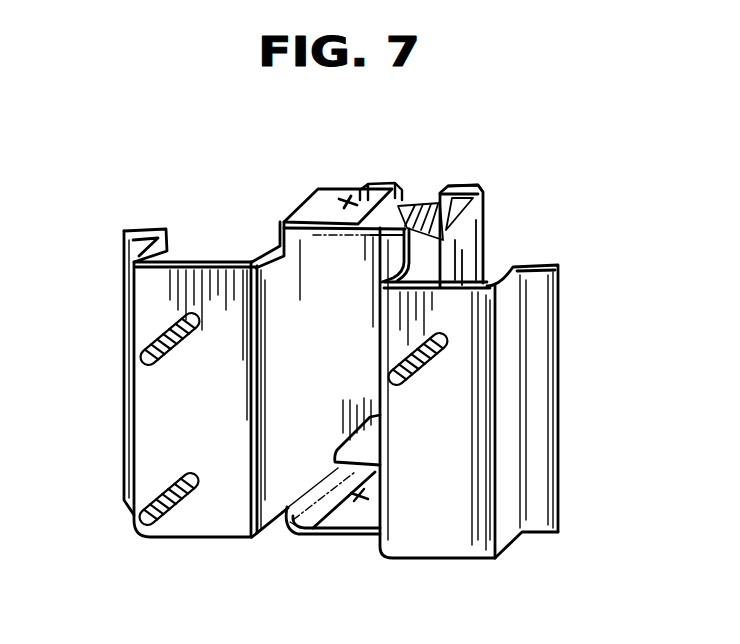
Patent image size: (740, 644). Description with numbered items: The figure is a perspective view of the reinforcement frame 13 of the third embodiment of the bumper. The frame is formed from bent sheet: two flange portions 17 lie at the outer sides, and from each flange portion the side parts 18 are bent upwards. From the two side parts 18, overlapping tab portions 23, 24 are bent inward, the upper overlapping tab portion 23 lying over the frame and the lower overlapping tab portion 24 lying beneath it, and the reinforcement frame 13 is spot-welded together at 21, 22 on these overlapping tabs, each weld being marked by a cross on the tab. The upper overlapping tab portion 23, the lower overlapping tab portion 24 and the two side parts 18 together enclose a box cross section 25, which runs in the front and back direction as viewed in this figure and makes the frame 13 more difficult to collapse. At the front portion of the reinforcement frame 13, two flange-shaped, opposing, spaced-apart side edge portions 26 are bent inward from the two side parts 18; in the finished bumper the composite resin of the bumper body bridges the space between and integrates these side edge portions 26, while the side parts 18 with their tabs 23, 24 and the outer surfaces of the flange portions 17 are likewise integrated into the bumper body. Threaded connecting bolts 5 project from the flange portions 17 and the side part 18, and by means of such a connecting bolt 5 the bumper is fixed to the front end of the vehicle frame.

The connecting bolt 5 is at (160, 337).
The reinforcement frame 13 is at (343, 377).
The flange portion 17 is at (200, 515).
The side part 18 is at (455, 270).
The spot weld 21 is at (342, 193).
The spot weld 22 is at (352, 507).
The upper overlapping tab portion 23 is at (288, 197).
The lower overlapping tab portion 24 is at (331, 550).
The box cross section 25 is at (315, 373).
The side edge portion 26 is at (393, 183).